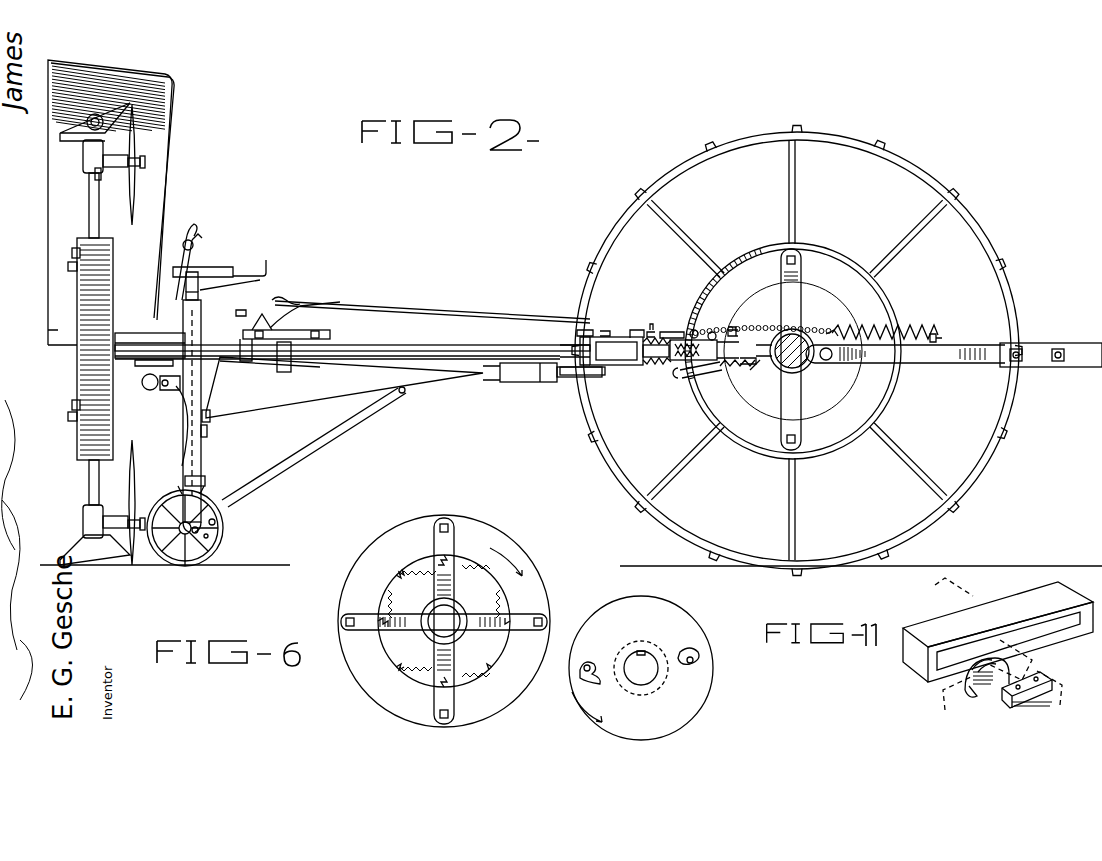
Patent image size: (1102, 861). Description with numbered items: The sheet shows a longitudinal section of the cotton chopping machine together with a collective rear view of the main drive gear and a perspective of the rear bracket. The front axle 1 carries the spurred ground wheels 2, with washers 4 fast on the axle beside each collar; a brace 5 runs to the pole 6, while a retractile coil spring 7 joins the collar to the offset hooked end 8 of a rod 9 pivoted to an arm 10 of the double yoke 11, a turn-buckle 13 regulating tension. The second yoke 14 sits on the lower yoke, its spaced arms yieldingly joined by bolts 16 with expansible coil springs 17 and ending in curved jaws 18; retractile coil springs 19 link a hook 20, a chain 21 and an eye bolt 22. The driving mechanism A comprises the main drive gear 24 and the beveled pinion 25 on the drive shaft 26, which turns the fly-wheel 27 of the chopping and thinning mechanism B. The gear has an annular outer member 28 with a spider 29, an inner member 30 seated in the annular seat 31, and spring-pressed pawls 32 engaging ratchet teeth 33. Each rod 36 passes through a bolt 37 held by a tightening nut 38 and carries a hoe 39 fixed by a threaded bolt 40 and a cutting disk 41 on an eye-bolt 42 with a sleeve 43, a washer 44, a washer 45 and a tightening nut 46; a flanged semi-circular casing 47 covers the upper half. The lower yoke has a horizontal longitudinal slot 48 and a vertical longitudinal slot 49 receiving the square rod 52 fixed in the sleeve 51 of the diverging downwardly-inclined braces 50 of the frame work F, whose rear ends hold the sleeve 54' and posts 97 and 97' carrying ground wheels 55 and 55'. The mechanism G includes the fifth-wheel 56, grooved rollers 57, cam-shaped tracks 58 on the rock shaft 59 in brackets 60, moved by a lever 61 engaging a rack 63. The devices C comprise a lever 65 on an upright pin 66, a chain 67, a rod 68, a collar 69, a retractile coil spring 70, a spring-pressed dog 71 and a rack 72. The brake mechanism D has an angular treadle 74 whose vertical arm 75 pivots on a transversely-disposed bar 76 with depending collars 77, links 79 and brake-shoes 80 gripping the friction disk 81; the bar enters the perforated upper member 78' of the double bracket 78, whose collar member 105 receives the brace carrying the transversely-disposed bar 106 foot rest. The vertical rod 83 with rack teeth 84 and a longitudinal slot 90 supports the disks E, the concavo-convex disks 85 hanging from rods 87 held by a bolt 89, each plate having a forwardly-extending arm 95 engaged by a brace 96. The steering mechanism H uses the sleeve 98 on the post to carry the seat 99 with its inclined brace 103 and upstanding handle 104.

In FIG. 2, the front axle 1 is at (805, 364).
In FIG. 2, the spurred ground wheels 2 is at (786, 132).
In FIG. 2, the washer 4 is at (774, 362).
In FIG. 2, the brace 5 is at (992, 364).
In FIG. 2, the pole 6 is at (1062, 346).
In FIG. 2, the retractile coil spring 7 is at (758, 360).
In FIG. 2, the offset hooked end 8 is at (722, 370).
In FIG. 2, the rod 9 is at (742, 368).
In FIG. 2, the arm 10 is at (676, 370).
In FIG. 2, the double yoke 11 is at (586, 376).
In FIG. 2, the turn-buckle 13 is at (690, 380).
In FIG. 2, the second yoke 14 is at (612, 336).
In FIG. 2, the bolt 16 is at (708, 330).
In FIG. 2, the expansible coil spring 17 is at (736, 332).
In FIG. 2, the curved jaws 18 is at (828, 330).
In FIG. 2, the retractile coil spring 19 is at (912, 338).
In FIG. 2, the hook 20 is at (942, 338).
In FIG. 2, the chain 21 is at (800, 326).
In FIG. 2, the eye bolt 22 is at (704, 323).
In FIG. 2, the main drive gear 24 is at (914, 392).
In FIG. 2, the beveled pinion 25 is at (672, 332).
In FIG. 2, the drive shaft 26 is at (424, 343).
In FIG. 2, the fly-wheel 27 is at (80, 302).
In FIG. 2, the annular outer member 28 is at (832, 452).
In FIG. 6, the annular outer member 28 is at (488, 518).
In FIG. 6, the spider 29 is at (430, 632).
In FIG. 2, the inner member 30 is at (845, 385).
In FIG. 6, the inner member 30 is at (634, 598).
In FIG. 2, the annular seat 31 is at (838, 396).
In FIG. 6, the annular seat 31 is at (482, 672).
In FIG. 6, the spring-pressed pawls 32 is at (586, 660).
In FIG. 6, the ratchet teeth 33 is at (396, 585).
In FIG. 2, the rod 36 is at (88, 200).
In FIG. 2, the bolt 37 is at (68, 268).
In FIG. 2, the tightening nut 38 is at (72, 266).
In FIG. 2, the hoe 39 is at (62, 140).
In FIG. 2, the threaded bolt 40 is at (86, 127).
In FIG. 2, the cutting disk 41 is at (136, 185).
In FIG. 2, the eye-bolt 42 is at (84, 168).
In FIG. 2, the sleeve 43 is at (110, 172).
In FIG. 2, the washer 44 is at (100, 574).
In FIG. 2, the washer 45 is at (140, 162).
In FIG. 2, the tightening nut 46 is at (146, 164).
In FIG. 2, the flanged semi-circular casing 47 is at (130, 76).
In FIG. 2, the horizontal longitudinal slot 48 is at (604, 368).
In FIG. 2, the vertical longitudinal slot 49 is at (680, 362).
In FIG. 2, the diverging downwardly-inclined braces 50 is at (326, 398).
In FIG. 11, the diverging downwardly-inclined braces 50 is at (940, 706).
In FIG. 2, the sleeve 51 is at (520, 384).
In FIG. 2, the square rod 52 is at (570, 380).
In FIG. 2, the vertically-disposed sleeve 54' is at (228, 432).
In FIG. 2, the ground wheel 55 is at (230, 533).
In FIG. 2, the ground wheel 55' is at (228, 545).
In FIG. 2, the fifth-wheel 56 is at (134, 345).
In FIG. 2, the grooved rollers 57 is at (145, 368).
In FIG. 2, the cam-shaped tracks 58 is at (142, 392).
In FIG. 2, the rock shaft 59 is at (165, 392).
In FIG. 2, the bracket 60 is at (200, 382).
In FIG. 2, the lever 61 is at (186, 240).
In FIG. 2, the rack 63 is at (176, 420).
In FIG. 2, the lever 65 is at (486, 313).
In FIG. 2, the upright pin 66 is at (634, 321).
In FIG. 2, the chain 67 is at (660, 318).
In FIG. 2, the rod 68 is at (651, 324).
In FIG. 2, the collar 69 is at (655, 362).
In FIG. 2, the retractile coil spring 70 is at (648, 364).
In FIG. 2, the spring-pressed dog 71 is at (580, 300).
In FIG. 2, the rack 72 is at (608, 326).
In FIG. 2, the angular treadle 74 is at (236, 302).
In FIG. 2, the vertical arm 75 is at (260, 312).
In FIG. 11, the transversely-disposed bar 76 is at (1060, 684).
In FIG. 2, the depending collars 77 is at (296, 366).
In FIG. 11, the double bracket 78 is at (977, 632).
In FIG. 11, the perforated upper member 78' is at (964, 629).
In FIG. 2, the link 79 is at (286, 289).
In FIG. 2, the brake-shoe 80 is at (300, 305).
In FIG. 2, the friction disk 81 is at (329, 297).
In FIG. 2, the vertical rod 83 is at (204, 401).
In FIG. 2, the rack teeth 84 is at (204, 478).
In FIG. 2, the concavo-convex disks 85 is at (176, 566).
In FIG. 2, the rod 87 is at (228, 512).
In FIG. 2, the bolt 89 is at (206, 489).
In FIG. 2, the longitudinal slot 90 is at (204, 440).
In FIG. 2, the forwardly-extending arm 95 is at (198, 556).
In FIG. 2, the brace 96 is at (340, 432).
In FIG. 2, the rotatable post 97 is at (207, 296).
In FIG. 2, the rotatable post 97' is at (196, 588).
In FIG. 2, the sleeve 98 is at (178, 268).
In FIG. 2, the seat 99 is at (196, 248).
In FIG. 2, the inclined brace 103 is at (203, 266).
In FIG. 2, the upstanding handle 104 is at (262, 260).
In FIG. 11, the collar member 105 is at (990, 700).
In FIG. 2, the transversely-disposed bar 106 is at (244, 362).
In FIG. 2, the driving mechanism A is at (897, 284).
In FIG. 2, the chopping and thinning mechanism B is at (31, 379).
In FIG. 2, the devices for throwing the driving mechanism into and out of operation C is at (568, 300).
In FIG. 2, the brake mechanism D is at (292, 326).
In FIG. 2, the vertically movable disks and the devices for operating the same E is at (222, 552).
In FIG. 2, the supporting braces or frame work F is at (442, 400).
In FIG. 2, the mechanism for raising and lowering the drive shaft and the rear portion of the f G is at (124, 424).
In FIG. 2, the steering mechanism H is at (239, 262).